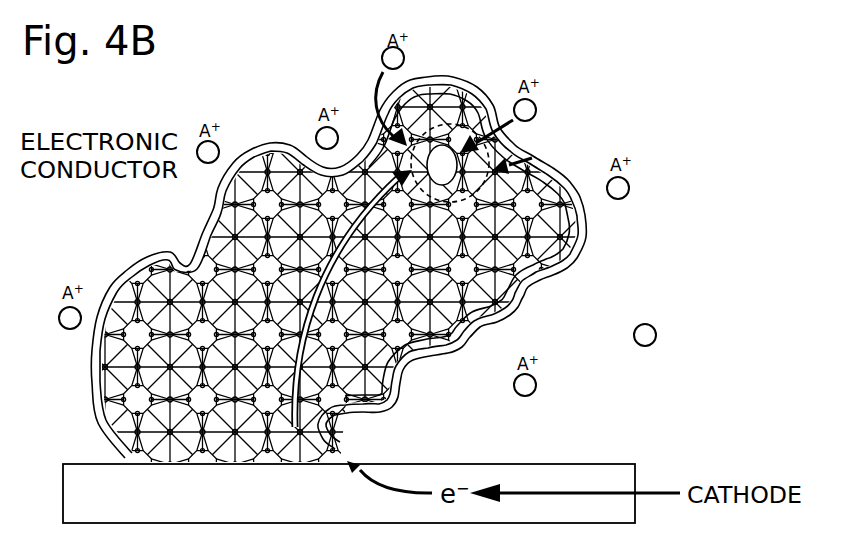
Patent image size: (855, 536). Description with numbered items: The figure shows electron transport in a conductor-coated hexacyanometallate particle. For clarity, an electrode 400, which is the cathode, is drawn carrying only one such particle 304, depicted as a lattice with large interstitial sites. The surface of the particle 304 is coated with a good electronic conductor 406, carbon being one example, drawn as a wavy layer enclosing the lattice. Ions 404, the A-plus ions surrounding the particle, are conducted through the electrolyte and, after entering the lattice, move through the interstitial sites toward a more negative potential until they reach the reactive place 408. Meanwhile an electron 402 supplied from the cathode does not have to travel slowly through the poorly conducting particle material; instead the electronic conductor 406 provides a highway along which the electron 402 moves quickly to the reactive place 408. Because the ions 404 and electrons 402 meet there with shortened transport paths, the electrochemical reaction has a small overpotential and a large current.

The AM1M2(CN)6 particle 304 is at (217, 360).
The electrode 400 is at (135, 506).
The electron 402 is at (362, 449).
The ion 404 is at (652, 346).
The electronic conductor 406 is at (208, 211).
The reactive place 408 is at (490, 152).